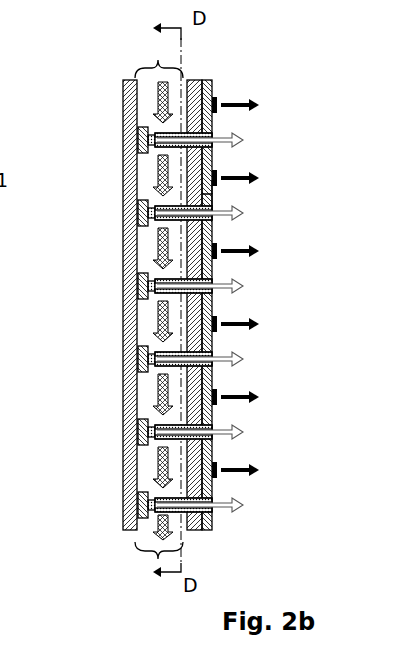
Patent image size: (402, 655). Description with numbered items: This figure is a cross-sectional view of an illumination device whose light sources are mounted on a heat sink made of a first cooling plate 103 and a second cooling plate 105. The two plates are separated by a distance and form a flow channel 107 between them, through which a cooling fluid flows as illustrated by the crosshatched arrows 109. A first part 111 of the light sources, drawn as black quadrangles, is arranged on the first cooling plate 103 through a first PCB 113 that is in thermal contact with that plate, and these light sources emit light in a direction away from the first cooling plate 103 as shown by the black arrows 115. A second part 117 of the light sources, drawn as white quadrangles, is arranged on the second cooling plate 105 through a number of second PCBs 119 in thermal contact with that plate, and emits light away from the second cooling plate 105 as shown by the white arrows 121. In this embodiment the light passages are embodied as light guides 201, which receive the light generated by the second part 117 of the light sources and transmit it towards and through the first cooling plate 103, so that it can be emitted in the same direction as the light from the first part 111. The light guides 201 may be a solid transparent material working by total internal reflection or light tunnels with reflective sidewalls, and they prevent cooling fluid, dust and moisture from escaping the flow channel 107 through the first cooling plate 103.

The first cooling plate 103 is at (203, 80).
The second cooling plate 105 is at (128, 92).
The flow channel 107 is at (150, 312).
The crosshatched arrows 109 is at (160, 257).
The first part of the light sources 111 is at (213, 187).
The first PCB 113 is at (213, 198).
The black arrows 115 is at (252, 186).
The second part of the light sources 117 is at (156, 204).
The second PCBs 119 is at (140, 216).
The white arrows 121 is at (245, 362).
The light guides 201 is at (213, 224).